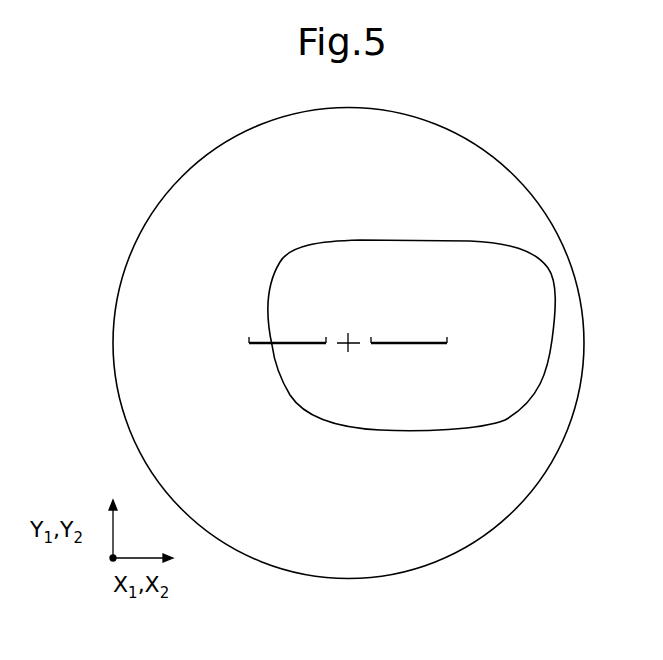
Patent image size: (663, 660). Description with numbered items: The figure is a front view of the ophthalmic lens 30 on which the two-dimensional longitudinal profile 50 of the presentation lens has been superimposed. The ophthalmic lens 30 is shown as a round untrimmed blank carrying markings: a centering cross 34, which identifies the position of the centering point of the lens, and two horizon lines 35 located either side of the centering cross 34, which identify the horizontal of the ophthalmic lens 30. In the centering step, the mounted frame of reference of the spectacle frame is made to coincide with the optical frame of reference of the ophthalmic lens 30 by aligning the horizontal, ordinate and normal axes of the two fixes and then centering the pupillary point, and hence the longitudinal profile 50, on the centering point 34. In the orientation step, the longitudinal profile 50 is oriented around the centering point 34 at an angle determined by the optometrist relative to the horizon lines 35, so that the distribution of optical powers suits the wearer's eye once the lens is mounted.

The ophthalmic lens 30 is at (503, 164).
The acquired longitudinal profile 50 is at (402, 240).
The centering cross 34 is at (349, 343).
The horizon lines 35 is at (290, 342).